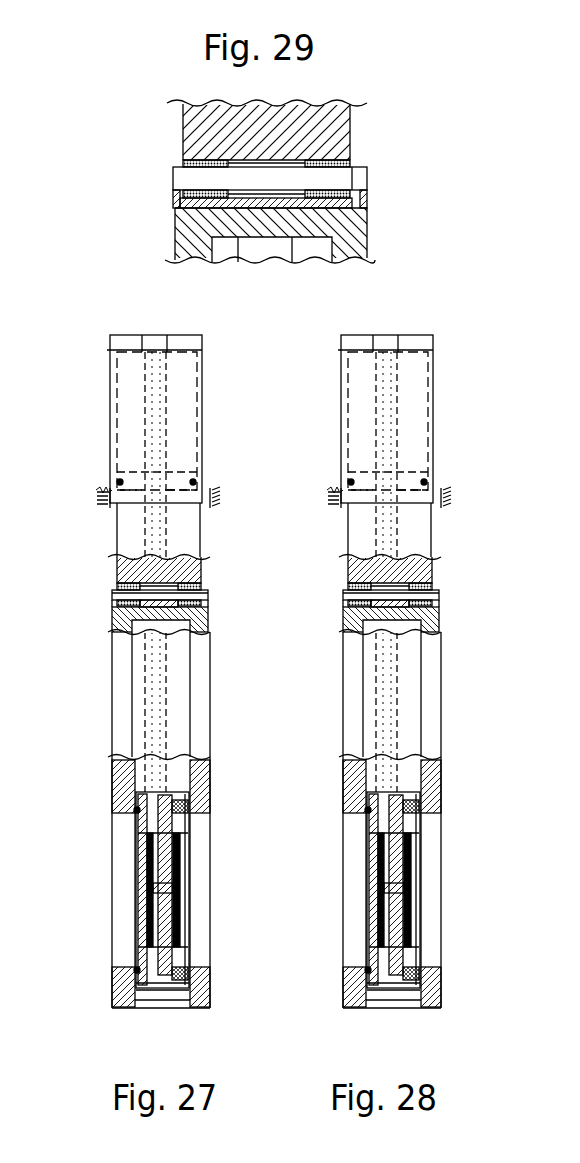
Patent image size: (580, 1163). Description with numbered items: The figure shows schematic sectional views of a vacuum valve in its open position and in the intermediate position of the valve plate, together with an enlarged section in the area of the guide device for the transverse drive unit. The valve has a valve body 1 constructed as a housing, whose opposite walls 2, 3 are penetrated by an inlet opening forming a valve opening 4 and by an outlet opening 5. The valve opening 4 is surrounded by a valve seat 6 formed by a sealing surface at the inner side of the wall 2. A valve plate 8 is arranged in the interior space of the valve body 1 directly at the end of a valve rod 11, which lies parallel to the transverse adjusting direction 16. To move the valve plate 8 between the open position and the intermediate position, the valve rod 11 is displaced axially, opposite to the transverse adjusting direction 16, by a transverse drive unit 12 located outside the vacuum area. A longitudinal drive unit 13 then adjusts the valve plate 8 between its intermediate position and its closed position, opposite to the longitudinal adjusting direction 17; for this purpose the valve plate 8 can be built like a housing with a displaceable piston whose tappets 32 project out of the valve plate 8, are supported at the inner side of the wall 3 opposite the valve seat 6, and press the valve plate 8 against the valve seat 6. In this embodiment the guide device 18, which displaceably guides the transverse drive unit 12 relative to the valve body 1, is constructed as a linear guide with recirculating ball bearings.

In FIG. 27, the valve body 1 is at (219, 627).
In FIG. 28, the valve body 1 is at (448, 627).
In FIG. 28, the wall 2 is at (352, 782).
In FIG. 28, the wall 3 is at (428, 782).
In FIG. 28, the valve opening 4 is at (352, 862).
In FIG. 28, the outlet opening 5 is at (432, 845).
In FIG. 28, the valve seat 6 is at (363, 988).
In FIG. 27, the valve plate 8 is at (189, 942).
In FIG. 28, the valve plate 8 is at (422, 930).
In FIG. 27, the valve rod 11 is at (166, 530).
In FIG. 28, the valve rod 11 is at (398, 529).
In FIG. 27, the transverse drive unit 12 is at (207, 398).
In FIG. 28, the transverse drive unit 12 is at (440, 398).
In FIG. 27, the longitudinal drive unit 13 is at (157, 800).
In FIG. 27, the transverse adjusting direction 16 is at (78, 417).
In FIG. 27, the longitudinal adjusting direction 17 is at (100, 913).
In FIG. 27, the guide device 18 is at (213, 590).
In FIG. 28, the guide device 18 is at (447, 590).
In FIG. 29, the guide device 18 is at (155, 155).
In FIG. 27, the tappets 32 is at (190, 975).